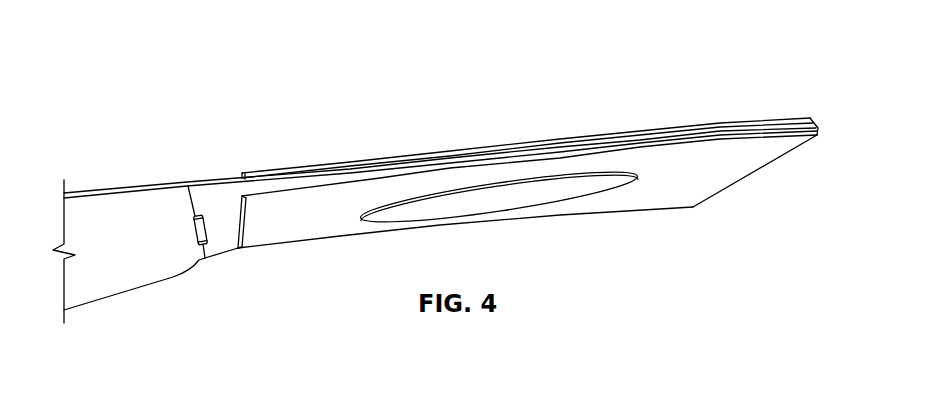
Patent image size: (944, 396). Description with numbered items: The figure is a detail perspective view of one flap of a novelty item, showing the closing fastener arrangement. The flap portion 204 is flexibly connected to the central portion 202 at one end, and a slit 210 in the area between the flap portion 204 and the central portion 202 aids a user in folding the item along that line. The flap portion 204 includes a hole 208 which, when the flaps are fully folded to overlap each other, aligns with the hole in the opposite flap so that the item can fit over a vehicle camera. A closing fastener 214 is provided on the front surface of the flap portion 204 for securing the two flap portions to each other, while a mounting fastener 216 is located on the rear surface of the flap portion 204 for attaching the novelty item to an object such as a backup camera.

The central portion 202 is at (123, 198).
The first flap portion 204 is at (212, 192).
The hole 208 is at (493, 197).
The slit 210 is at (193, 229).
The closing fastener 214 is at (732, 168).
The mounting fastener 216 is at (748, 122).